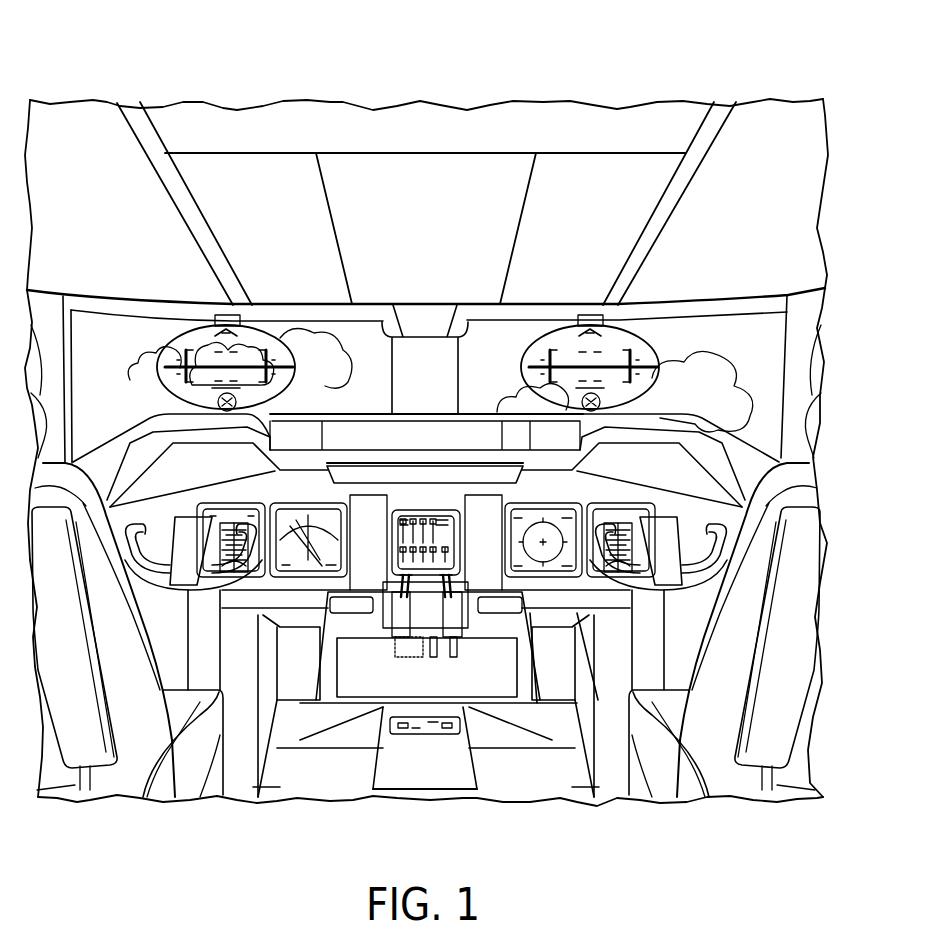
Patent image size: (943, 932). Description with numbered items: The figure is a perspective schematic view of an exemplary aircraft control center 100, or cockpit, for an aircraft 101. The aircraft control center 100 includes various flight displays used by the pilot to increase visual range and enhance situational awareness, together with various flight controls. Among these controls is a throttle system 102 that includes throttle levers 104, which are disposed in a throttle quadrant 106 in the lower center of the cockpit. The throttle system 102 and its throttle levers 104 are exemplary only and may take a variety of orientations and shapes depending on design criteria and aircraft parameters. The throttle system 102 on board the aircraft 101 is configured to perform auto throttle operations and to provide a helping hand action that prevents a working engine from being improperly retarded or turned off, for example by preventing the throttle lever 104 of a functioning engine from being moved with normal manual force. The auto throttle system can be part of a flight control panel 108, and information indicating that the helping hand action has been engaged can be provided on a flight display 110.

The aircraft control center 100 is at (770, 85).
The aircraft 101 is at (716, 114).
The throttle system 102 is at (380, 660).
The throttle levers 104 is at (400, 628).
The throttle quadrant 106 is at (534, 660).
The flight control panel 108 is at (433, 507).
The flight display 110 is at (563, 503).